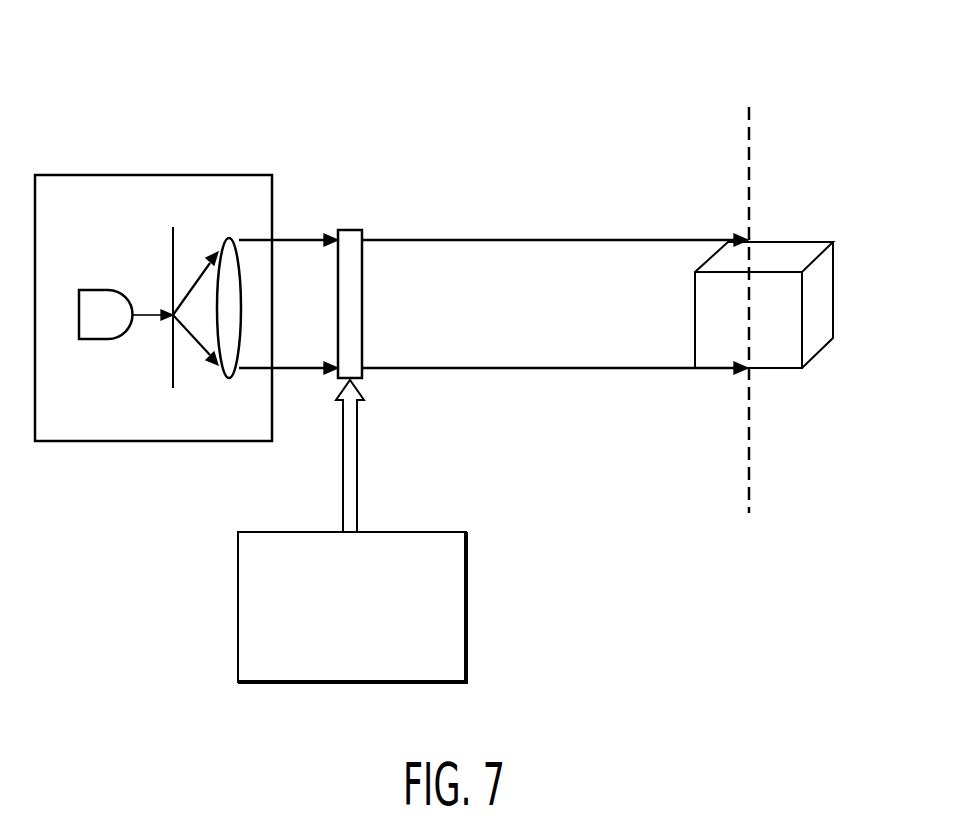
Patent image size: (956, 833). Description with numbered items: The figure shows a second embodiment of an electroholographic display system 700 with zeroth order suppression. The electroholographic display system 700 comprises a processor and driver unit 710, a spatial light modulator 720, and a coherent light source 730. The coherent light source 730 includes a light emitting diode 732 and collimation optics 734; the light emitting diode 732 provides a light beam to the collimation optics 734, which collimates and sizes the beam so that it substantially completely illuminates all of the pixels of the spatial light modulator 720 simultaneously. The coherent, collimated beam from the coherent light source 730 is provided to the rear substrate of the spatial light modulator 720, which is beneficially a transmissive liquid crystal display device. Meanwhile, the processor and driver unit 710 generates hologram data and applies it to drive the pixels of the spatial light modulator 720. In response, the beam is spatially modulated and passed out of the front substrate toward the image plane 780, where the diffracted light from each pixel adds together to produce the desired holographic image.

The electroholographic display system 700 is at (571, 44).
The processor and driver unit 710 is at (467, 614).
The spatial light modulator 720 is at (350, 230).
The coherent light source 730 is at (157, 175).
The light emitting diode 732 is at (101, 290).
The collimation optics 734 is at (229, 238).
The image plane 780 is at (749, 107).